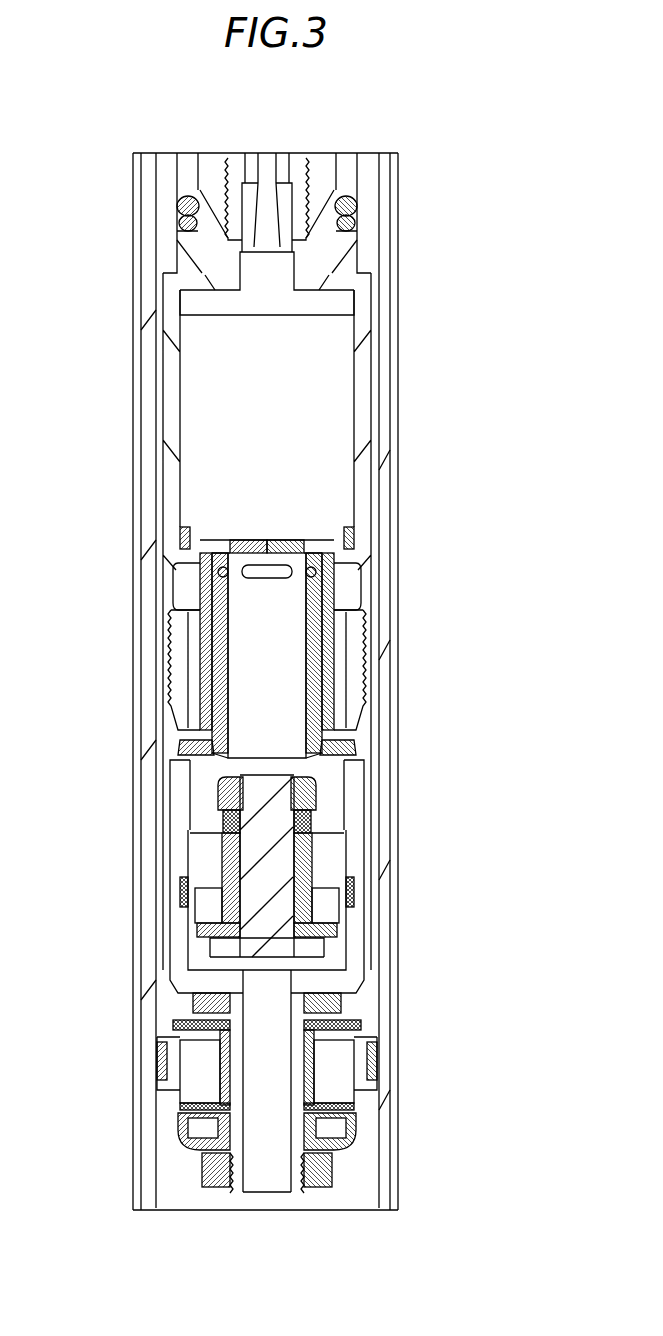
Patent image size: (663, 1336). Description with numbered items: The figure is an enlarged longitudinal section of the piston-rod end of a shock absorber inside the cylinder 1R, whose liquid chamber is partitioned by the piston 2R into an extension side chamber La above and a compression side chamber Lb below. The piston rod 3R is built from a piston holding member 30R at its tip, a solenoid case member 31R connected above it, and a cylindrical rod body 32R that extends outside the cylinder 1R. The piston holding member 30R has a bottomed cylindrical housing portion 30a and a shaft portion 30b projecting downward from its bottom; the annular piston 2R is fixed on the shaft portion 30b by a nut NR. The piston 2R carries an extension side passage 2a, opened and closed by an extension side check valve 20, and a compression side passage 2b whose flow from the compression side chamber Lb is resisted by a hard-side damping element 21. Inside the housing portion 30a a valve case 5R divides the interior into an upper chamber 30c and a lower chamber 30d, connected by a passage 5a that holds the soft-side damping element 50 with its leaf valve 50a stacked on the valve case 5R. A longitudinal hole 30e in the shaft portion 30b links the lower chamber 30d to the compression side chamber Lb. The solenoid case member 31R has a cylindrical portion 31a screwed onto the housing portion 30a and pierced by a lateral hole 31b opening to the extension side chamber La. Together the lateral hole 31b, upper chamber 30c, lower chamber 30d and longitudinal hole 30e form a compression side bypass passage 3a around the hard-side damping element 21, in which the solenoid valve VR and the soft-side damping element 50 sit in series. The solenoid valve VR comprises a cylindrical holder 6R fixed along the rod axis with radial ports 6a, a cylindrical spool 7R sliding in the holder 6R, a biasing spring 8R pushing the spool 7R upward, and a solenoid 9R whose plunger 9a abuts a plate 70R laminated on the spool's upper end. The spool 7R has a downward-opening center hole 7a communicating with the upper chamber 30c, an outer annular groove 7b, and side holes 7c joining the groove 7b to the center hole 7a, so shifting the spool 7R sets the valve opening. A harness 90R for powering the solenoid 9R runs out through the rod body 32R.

The rod body 32R is at (240, 162).
The harness 90R is at (268, 163).
The piston rod 3R is at (331, 172).
The extension side chamber La is at (167, 234).
The solenoid 9R is at (370, 330).
The cylindrical portion 31a is at (165, 419).
The solenoid case member 31R is at (380, 426).
The plunger 9a is at (255, 525).
The plate 70R is at (291, 525).
The annular groove 7b is at (180, 574).
The lateral hole 31b is at (372, 570).
The port 6a is at (172, 593).
The holder 6R is at (192, 676).
The solenoid valve VR is at (362, 637).
The side hole 7c is at (262, 580).
The center hole 7a is at (283, 710).
The spool 7R is at (360, 701).
The biasing spring 8R is at (200, 755).
The housing portion 30a is at (175, 790).
The upper chamber 30c is at (340, 792).
The soft-side damping element 50 is at (175, 826).
The leaf valve 50a is at (325, 818).
The passage 5a is at (182, 868).
The valve case 5R is at (357, 866).
The piston holding member 30R is at (166, 953).
The lower chamber 30d is at (340, 953).
The compression side bypass passage 3a is at (253, 1017).
The hard-side damping element 21 is at (365, 1022).
The piston 2R is at (158, 1057).
The compression side passage 2b is at (378, 1058).
The extension side passage 2a is at (182, 1078).
The shaft portion 30b is at (310, 1098).
The extension side check valve 20 is at (168, 1112).
The compression side chamber Lb is at (355, 1175).
The cylinder 1R is at (140, 1186).
The longitudinal hole 30e is at (265, 1194).
The nut NR is at (325, 1192).